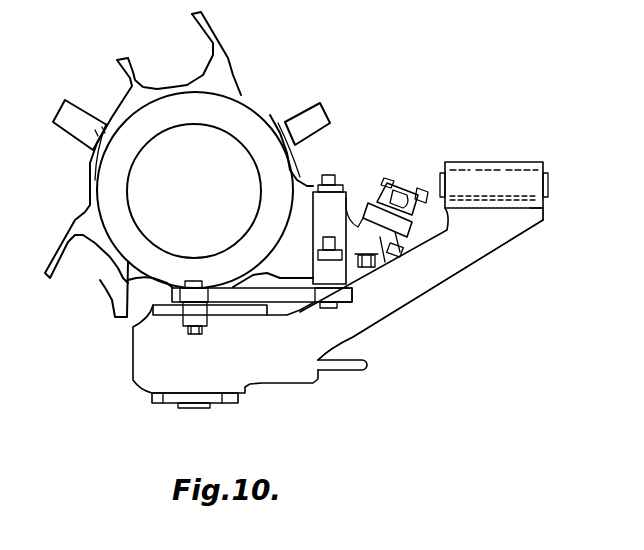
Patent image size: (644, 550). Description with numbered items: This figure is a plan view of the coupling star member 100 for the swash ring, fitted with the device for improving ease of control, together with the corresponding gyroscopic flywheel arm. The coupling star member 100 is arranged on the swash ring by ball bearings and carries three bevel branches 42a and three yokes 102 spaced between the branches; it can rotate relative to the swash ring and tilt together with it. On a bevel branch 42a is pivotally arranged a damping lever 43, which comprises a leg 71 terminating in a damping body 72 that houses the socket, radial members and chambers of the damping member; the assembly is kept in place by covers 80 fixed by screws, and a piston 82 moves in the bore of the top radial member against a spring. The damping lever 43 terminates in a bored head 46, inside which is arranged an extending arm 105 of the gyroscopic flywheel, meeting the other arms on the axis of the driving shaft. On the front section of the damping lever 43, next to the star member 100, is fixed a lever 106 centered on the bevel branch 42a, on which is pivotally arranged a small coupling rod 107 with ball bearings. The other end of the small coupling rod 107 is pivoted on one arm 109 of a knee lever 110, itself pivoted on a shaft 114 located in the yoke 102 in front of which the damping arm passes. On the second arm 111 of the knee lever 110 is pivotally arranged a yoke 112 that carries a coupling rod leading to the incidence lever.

The coupling star member 100 is at (220, 117).
The yoke 102 is at (204, 38).
The bevel branch 42a is at (65, 100).
The small coupling rod 107 is at (283, 296).
The lever 106 is at (180, 320).
The damping body 72 is at (245, 378).
The cover 80 is at (152, 399).
The piston 82 is at (340, 372).
The leg 71 is at (338, 343).
The damping lever 43 is at (408, 312).
The knee lever 110 is at (330, 220).
The shaft 114 is at (332, 175).
The arm of knee lever 109 is at (330, 294).
The yoke 112 is at (400, 174).
The second arm of knee lever 111 is at (380, 262).
The bored head 46 is at (473, 177).
The extending arm 105 is at (541, 220).